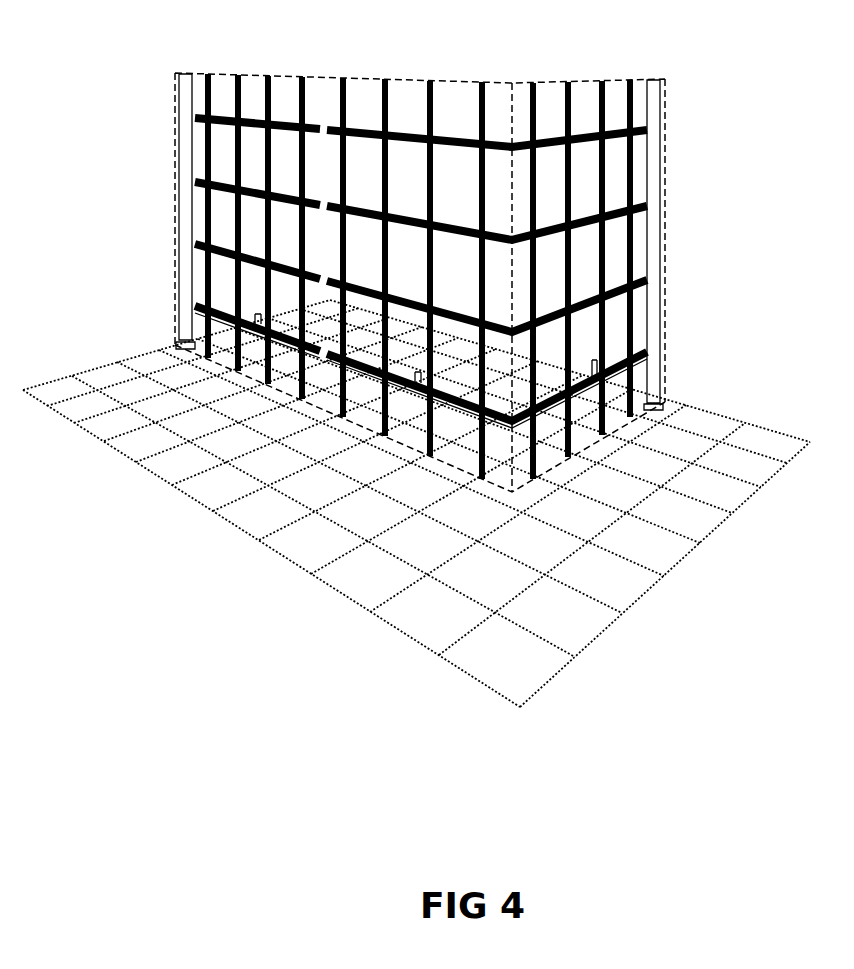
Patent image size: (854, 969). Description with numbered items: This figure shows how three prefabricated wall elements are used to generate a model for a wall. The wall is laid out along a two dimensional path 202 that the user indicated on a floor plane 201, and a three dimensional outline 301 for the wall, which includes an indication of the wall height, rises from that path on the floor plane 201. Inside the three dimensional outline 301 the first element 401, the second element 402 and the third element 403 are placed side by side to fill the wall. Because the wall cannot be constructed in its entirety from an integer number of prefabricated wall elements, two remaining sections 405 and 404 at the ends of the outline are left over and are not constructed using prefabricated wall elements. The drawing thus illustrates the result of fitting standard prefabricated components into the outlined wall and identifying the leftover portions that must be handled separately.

The floor plane 201 is at (598, 645).
The two dimensional path 202 is at (250, 380).
The three dimensional outline 301 is at (672, 128).
The first element 401 is at (576, 98).
The second element 402 is at (395, 106).
The third element 403 is at (277, 96).
The section not constructed using prefabricated wall elements 404 is at (655, 253).
The section not constructed using prefabricated wall elements 405 is at (186, 208).